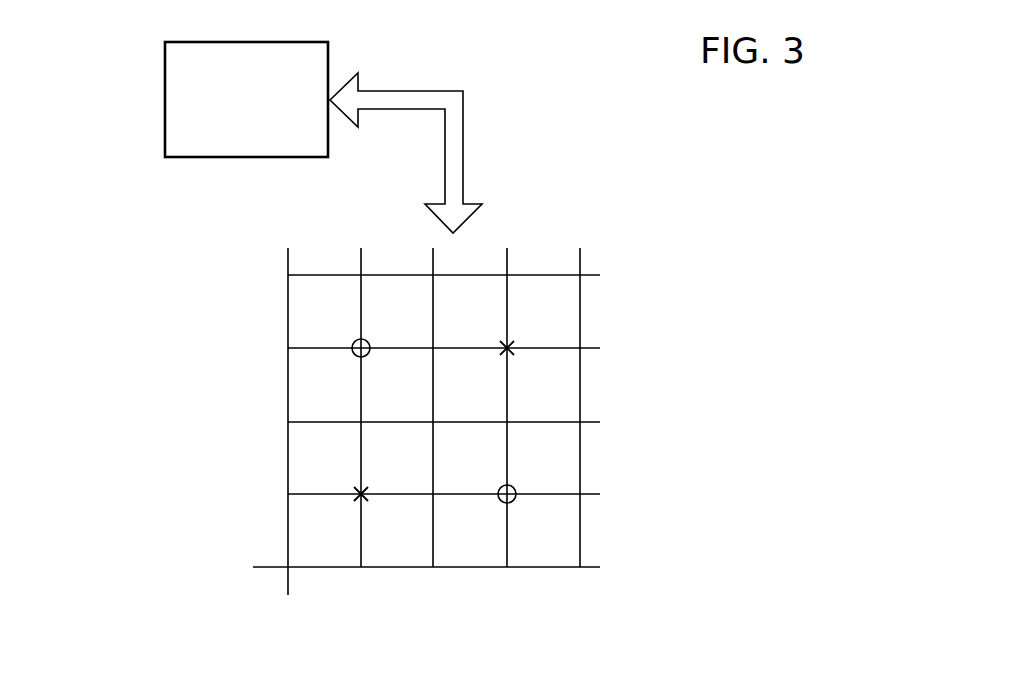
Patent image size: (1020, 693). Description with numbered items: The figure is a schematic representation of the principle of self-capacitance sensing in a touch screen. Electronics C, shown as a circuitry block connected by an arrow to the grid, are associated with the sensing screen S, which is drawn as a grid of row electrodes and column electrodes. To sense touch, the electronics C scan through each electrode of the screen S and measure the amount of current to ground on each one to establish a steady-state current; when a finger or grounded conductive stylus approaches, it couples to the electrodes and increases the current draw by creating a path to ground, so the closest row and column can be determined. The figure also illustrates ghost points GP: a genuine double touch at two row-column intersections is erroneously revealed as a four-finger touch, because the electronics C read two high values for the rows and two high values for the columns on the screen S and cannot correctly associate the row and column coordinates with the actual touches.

The electronics C is at (185, 98).
The sensing screen S is at (688, 333).
The ghost points GP is at (378, 486).